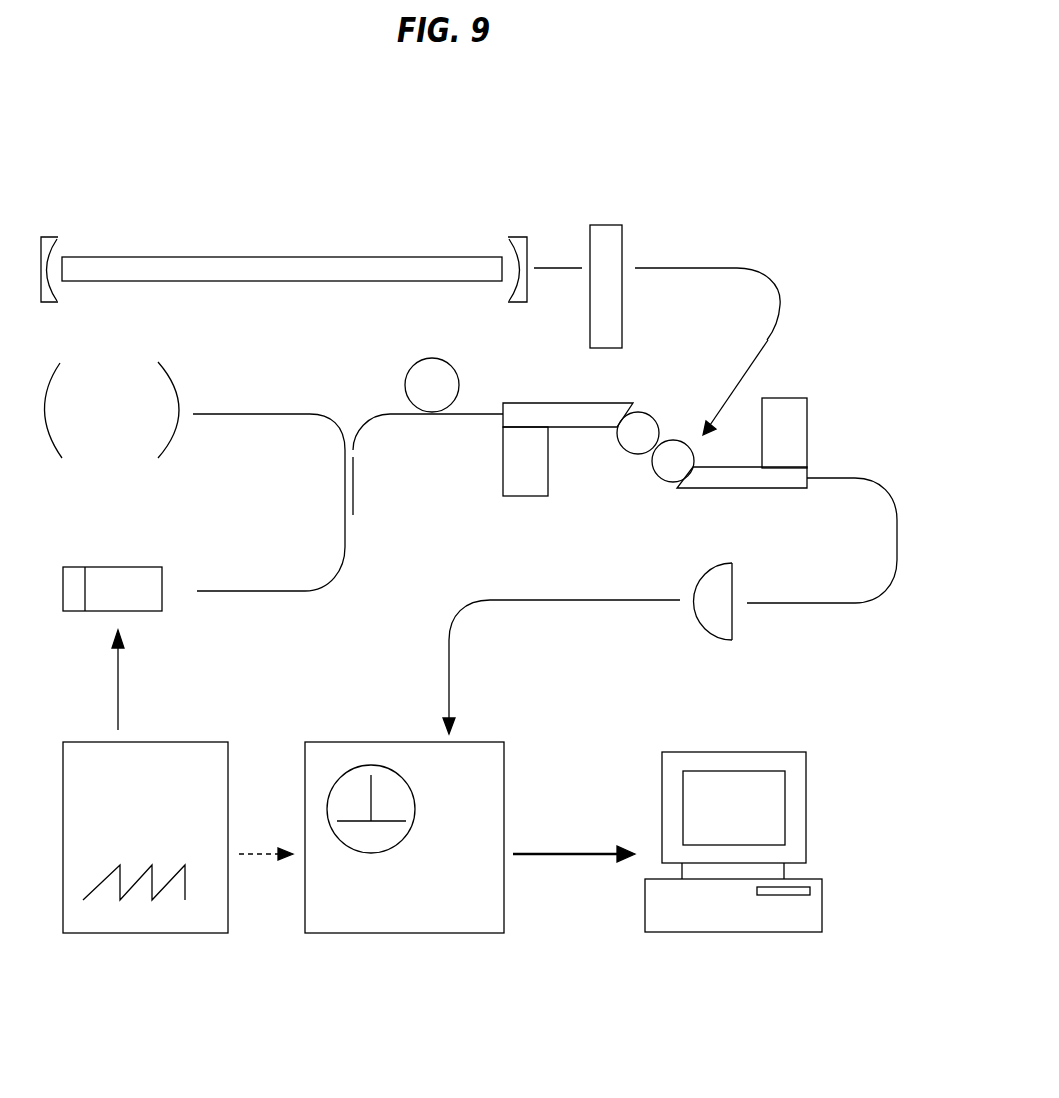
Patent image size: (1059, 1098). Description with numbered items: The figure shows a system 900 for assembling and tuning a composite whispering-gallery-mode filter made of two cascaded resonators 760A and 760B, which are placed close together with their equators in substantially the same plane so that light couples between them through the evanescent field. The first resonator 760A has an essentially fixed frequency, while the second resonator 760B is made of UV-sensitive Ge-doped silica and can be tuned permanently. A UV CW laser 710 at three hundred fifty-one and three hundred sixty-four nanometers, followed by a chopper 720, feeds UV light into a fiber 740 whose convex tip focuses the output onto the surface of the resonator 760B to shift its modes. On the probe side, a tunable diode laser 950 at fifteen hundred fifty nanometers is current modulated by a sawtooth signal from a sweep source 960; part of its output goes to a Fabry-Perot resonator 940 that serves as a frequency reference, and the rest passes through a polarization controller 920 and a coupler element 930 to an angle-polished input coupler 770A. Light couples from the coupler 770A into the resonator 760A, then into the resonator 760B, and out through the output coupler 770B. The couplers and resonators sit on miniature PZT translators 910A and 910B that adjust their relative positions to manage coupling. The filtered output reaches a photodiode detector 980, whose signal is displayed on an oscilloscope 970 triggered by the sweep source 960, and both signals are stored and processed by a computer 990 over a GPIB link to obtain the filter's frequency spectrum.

The system 900 is at (627, 137).
The radiation source 710 is at (290, 195).
The chopper 720 is at (592, 240).
The multimode fiber 740 is at (778, 298).
The optical coupler 770A is at (578, 405).
The optical coupler 770B is at (762, 483).
The PZT translator 910A is at (500, 465).
The PZT translator 910B is at (797, 398).
The first resonator 760A is at (627, 440).
The second resonator 760B is at (660, 465).
The polarization controller 920 is at (418, 396).
The fiber coupler 930 is at (330, 467).
The Fabry-Perot resonator 940 is at (172, 373).
The monitor light source 950 is at (148, 615).
The signal generator 960 is at (188, 740).
The oscillator 970 is at (408, 934).
The photodiode 980 is at (730, 625).
The signal processor 990 is at (727, 934).